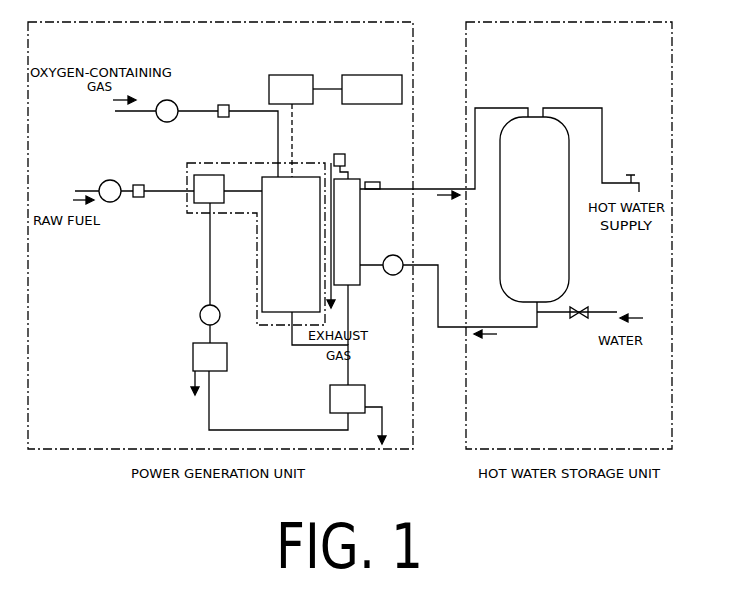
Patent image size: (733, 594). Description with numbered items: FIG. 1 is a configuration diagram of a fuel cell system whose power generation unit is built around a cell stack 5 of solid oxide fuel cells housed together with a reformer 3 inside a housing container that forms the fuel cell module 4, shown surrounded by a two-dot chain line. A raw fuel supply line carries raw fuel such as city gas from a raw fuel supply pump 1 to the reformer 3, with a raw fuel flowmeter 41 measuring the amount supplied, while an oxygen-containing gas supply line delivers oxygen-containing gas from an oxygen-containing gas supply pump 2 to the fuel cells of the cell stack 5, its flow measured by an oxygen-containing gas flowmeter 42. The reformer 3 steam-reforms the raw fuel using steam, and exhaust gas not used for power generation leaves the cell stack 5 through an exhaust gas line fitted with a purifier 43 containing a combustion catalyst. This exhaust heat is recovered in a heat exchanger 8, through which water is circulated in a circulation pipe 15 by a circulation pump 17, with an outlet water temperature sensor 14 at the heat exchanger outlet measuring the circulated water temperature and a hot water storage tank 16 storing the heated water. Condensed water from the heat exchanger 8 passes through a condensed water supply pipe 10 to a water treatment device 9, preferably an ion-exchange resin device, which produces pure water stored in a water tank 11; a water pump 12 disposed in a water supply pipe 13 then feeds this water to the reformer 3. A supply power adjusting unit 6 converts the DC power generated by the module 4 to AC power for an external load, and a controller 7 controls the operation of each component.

The raw fuel supply pump 1 is at (112, 203).
The oxygen-containing gas supply pump 2 is at (172, 100).
The reformer 3 is at (215, 193).
The fuel cell module 4 is at (258, 327).
The cell stack 5 is at (287, 302).
The supply power adjusting unit 6 is at (280, 92).
The controller 7 is at (379, 88).
The heat exchanger 8 is at (350, 278).
The water treatment device 9 is at (335, 405).
The condensed water supply pipe 10 is at (208, 411).
The water tank 11 is at (201, 362).
The water pump 12 is at (204, 318).
The water supply pipe 13 is at (208, 296).
The outlet water temperature sensor 14 is at (368, 182).
The circulation pipe 15 is at (447, 187).
The hot water storage tank 16 is at (552, 130).
The circulation pump 17 is at (392, 275).
The raw fuel flowmeter 41 is at (137, 185).
The oxygen-containing gas flowmeter 42 is at (222, 105).
The purifier 43 is at (340, 154).